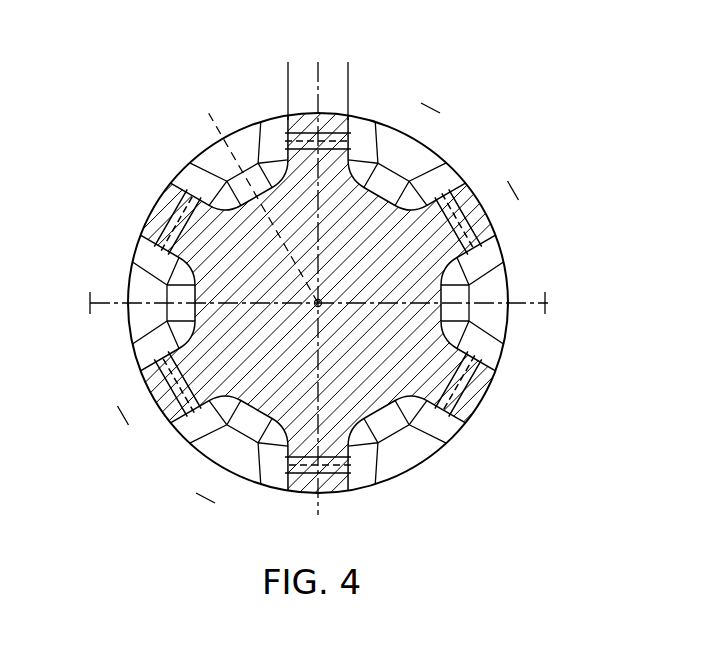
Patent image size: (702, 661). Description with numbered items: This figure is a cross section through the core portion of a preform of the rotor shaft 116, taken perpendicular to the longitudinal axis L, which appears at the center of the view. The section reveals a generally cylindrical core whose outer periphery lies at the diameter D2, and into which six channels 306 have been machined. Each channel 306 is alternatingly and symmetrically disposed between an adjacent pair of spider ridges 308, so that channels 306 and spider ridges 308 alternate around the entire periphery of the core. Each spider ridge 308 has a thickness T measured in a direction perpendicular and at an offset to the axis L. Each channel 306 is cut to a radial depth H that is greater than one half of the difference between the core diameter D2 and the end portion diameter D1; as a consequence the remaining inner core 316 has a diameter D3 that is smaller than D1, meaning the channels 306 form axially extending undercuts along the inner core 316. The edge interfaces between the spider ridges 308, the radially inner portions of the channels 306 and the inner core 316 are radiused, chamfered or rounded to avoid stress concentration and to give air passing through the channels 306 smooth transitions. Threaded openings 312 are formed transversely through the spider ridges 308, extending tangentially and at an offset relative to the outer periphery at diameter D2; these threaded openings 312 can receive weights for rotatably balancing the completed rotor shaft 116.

The rotor shaft 116 is at (135, 108).
The channel 306 is at (128, 247).
The spider ridge 308 is at (155, 196).
The threaded opening 312 is at (447, 409).
The inner core 316 is at (222, 374).
The depth of channel H is at (252, 195).
The thickness of spider ridge T is at (380, 88).
The diameter of end portion D1 is at (206, 498).
The diameter of core portion D2 is at (123, 416).
The inner core diameter D3 is at (160, 303).
The longitudinal axis L is at (326, 302).